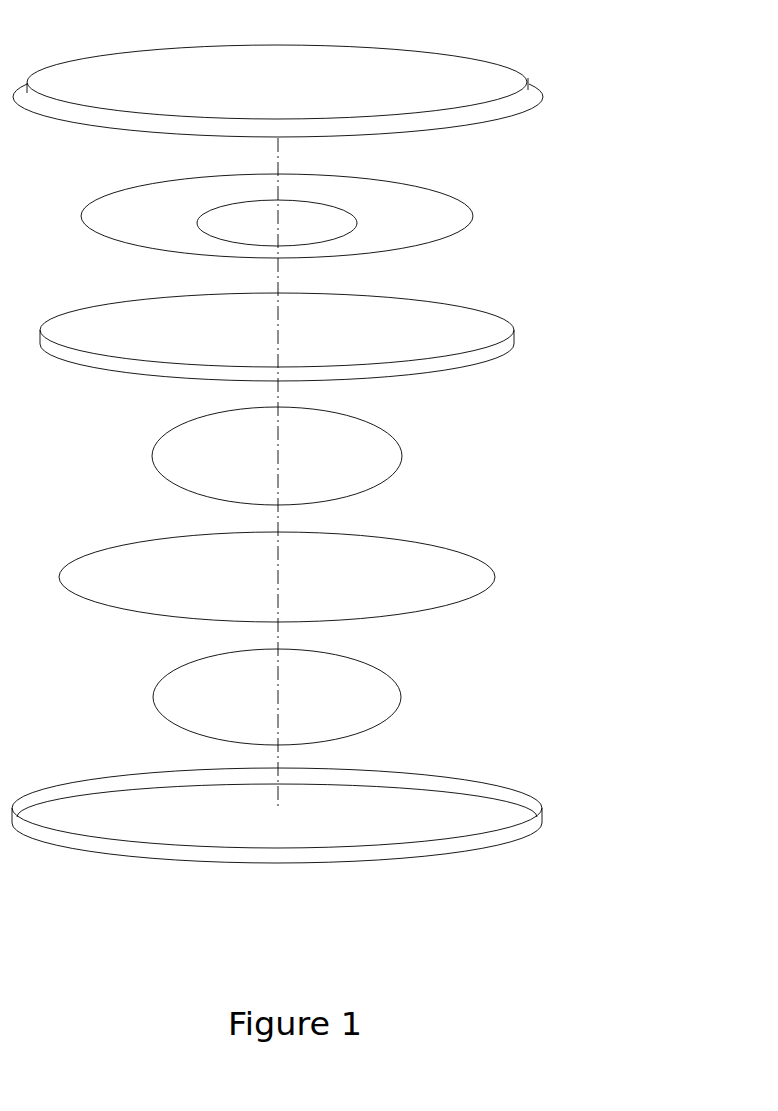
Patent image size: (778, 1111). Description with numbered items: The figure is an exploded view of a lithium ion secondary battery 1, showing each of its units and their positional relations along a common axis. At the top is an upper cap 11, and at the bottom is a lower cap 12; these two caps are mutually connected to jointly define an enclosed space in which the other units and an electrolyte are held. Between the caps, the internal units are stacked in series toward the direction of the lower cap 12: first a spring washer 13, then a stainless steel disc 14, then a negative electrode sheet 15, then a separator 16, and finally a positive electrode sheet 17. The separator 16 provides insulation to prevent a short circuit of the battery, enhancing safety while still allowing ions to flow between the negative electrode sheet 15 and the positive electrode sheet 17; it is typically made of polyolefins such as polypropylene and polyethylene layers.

The lithium ion secondary battery 1 is at (645, 467).
The upper cap 11 is at (517, 77).
The lower cap 12 is at (540, 808).
The spring washer 13 is at (468, 210).
The stainless steel disc 14 is at (510, 322).
The negative electrode sheet 15 is at (398, 456).
The separator 16 is at (490, 575).
The positive electrode sheet 17 is at (400, 695).